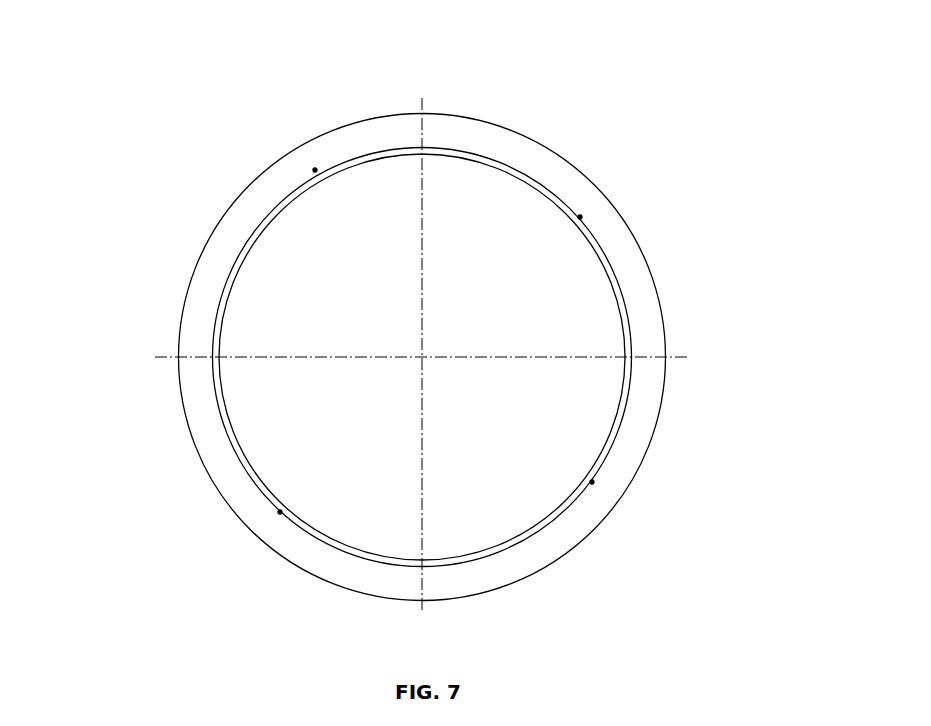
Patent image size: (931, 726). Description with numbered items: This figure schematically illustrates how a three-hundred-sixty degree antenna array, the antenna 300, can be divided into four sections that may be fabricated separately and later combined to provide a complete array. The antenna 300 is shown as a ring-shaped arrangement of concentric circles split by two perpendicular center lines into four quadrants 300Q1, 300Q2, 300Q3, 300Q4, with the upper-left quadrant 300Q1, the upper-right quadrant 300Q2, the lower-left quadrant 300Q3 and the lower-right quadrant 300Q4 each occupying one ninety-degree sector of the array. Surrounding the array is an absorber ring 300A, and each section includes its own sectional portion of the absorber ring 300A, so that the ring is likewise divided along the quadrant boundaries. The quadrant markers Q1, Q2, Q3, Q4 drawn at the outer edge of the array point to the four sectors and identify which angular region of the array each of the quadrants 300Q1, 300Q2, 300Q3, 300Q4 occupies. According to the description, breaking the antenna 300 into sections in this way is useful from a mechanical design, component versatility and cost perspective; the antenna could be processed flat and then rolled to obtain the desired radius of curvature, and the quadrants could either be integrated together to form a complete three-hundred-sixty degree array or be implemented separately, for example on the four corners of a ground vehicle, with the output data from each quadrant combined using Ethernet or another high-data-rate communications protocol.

The antenna 300 is at (663, 220).
The absorber ring 300A is at (512, 145).
The first quadrant 300Q1 is at (340, 277).
The second quadrant 300Q2 is at (578, 287).
The third quadrant 300Q3 is at (283, 420).
The fourth quadrant 300Q4 is at (523, 413).
The first quadrant Q1 is at (315, 170).
The second quadrant Q2 is at (580, 217).
The third quadrant Q3 is at (280, 512).
The fourth quadrant Q4 is at (592, 482).